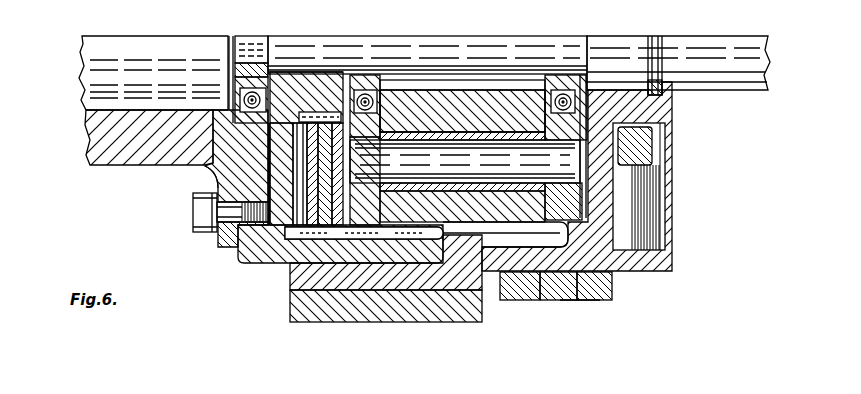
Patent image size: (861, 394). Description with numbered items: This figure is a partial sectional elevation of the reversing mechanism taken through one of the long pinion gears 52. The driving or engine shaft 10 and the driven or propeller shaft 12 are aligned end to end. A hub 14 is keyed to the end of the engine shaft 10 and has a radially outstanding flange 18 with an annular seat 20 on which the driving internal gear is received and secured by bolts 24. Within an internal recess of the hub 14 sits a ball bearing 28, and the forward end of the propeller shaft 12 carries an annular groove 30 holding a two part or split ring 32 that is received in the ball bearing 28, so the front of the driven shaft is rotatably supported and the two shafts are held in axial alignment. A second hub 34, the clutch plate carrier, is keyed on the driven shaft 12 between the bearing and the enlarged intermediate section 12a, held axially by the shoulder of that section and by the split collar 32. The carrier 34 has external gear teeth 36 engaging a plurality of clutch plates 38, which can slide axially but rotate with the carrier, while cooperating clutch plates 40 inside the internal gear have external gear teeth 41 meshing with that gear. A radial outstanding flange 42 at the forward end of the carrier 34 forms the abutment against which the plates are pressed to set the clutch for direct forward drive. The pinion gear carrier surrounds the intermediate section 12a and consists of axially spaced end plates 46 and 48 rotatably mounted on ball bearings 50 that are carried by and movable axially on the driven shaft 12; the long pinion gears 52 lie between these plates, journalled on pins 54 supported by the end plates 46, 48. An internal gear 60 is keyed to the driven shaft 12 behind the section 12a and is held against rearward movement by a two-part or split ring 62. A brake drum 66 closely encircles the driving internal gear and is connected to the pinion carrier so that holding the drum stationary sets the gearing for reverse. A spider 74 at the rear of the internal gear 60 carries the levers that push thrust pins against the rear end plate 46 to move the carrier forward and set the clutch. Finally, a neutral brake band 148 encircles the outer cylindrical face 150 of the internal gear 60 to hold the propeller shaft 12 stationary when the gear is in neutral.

The driving or engine shaft 10 is at (95, 68).
The driven or propeller shaft 12 is at (760, 68).
The enlarged intermediate section 12a is at (465, 31).
The hub 14 is at (118, 157).
The radially outstanding flange 18 is at (222, 240).
The annular seat 20 is at (251, 265).
The bolts 24 is at (198, 212).
The ball bearing 28 is at (203, 168).
The annular groove 30 is at (258, 46).
The two part or split ring 32 is at (270, 70).
The hub 34 is at (322, 82).
The external gear teeth 36 is at (228, 156).
The clutch plates 38 is at (386, 100).
The cooperating clutch plates 40 is at (318, 215).
The external gear teeth 41 is at (330, 215).
The radial outstanding flange 42 is at (300, 215).
The end plate 46 is at (592, 300).
The end plate 48 is at (362, 283).
The ball bearings 50 is at (366, 82).
The long pinion gears 52 is at (506, 300).
The pins 54 is at (578, 172).
The internal gear 60 is at (548, 302).
The two-part or split ring 62 is at (663, 95).
The brake drum 66 is at (330, 287).
The spider 74 is at (652, 146).
The neutral brake band 148 is at (577, 302).
The outer cylindrical face 150 is at (643, 275).